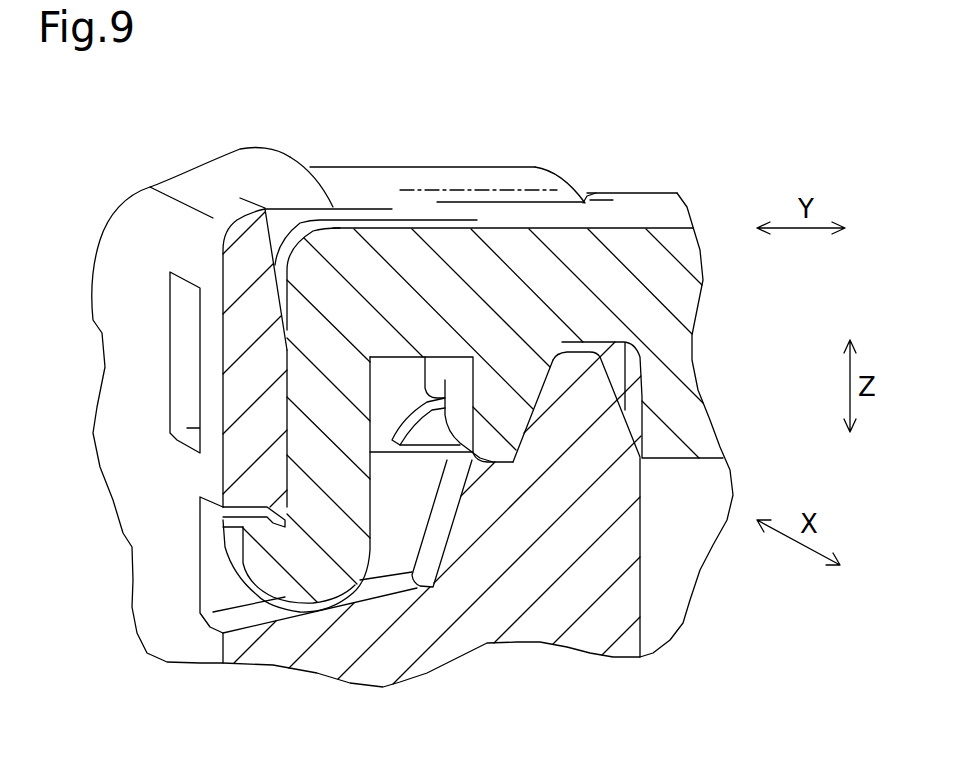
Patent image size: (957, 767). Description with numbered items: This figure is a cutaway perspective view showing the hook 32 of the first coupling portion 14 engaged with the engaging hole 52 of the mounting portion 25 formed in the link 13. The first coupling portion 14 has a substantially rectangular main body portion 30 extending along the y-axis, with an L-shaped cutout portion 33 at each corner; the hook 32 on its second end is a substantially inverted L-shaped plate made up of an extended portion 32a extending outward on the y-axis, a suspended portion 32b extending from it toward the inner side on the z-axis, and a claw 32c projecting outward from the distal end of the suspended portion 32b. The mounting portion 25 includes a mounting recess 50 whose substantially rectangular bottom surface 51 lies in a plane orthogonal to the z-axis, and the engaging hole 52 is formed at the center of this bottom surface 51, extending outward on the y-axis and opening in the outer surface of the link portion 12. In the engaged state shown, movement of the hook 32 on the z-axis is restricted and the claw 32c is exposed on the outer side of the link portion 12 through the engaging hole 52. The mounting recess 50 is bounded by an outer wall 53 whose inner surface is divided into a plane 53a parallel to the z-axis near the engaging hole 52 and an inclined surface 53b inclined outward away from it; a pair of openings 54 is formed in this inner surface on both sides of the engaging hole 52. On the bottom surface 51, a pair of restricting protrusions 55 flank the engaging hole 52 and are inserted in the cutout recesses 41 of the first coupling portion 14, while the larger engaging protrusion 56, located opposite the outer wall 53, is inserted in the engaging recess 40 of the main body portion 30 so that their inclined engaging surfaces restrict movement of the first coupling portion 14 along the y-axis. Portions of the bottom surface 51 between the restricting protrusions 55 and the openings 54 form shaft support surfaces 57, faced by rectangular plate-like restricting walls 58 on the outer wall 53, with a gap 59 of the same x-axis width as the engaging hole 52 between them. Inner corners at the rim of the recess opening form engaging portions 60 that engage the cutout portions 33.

The link portion 12 is at (240, 165).
The link 13 is at (205, 173).
The first coupling portion 14 is at (687, 297).
The mounting portion 25 is at (511, 177).
The main body portion 30 is at (675, 210).
The hook 32 is at (325, 243).
The extended portion 32a is at (354, 210).
The suspended portion 32b is at (293, 397).
The claw 32c is at (257, 538).
The cutout portion 33 is at (433, 220).
The engaging recess 40 is at (633, 378).
The cutout recess 41 is at (436, 390).
The mounting recess 50 is at (380, 445).
The bottom surface 51 is at (390, 422).
The engaging hole 52 is at (447, 504).
The outer wall 53 is at (233, 263).
The plane 53a is at (288, 452).
The inclined surface 53b is at (285, 277).
The opening 54 is at (183, 360).
The restricting protrusion 55 is at (412, 413).
The engaging protrusion 56 is at (570, 368).
The shaft support surface 57 is at (393, 447).
The restricting wall 58 is at (374, 212).
The gap 59 is at (312, 170).
The engaging portion 60 is at (582, 197).